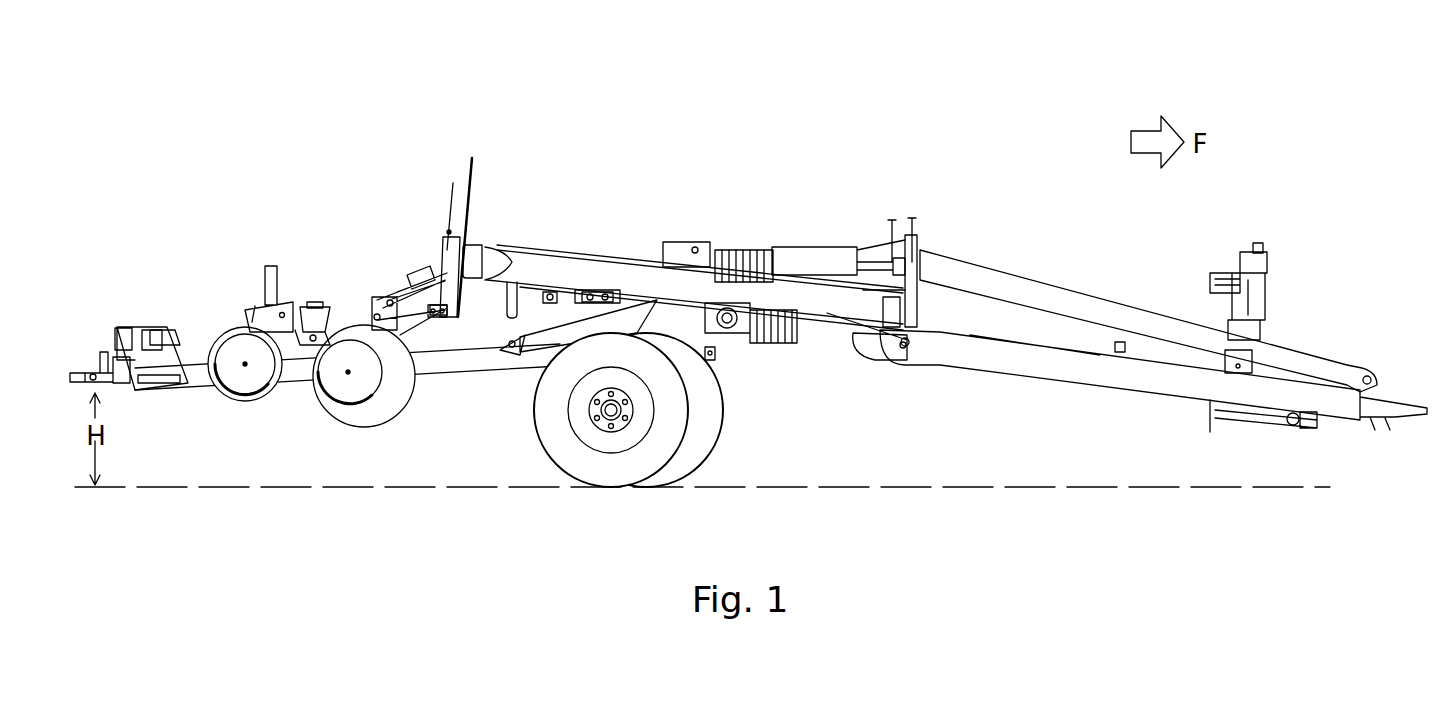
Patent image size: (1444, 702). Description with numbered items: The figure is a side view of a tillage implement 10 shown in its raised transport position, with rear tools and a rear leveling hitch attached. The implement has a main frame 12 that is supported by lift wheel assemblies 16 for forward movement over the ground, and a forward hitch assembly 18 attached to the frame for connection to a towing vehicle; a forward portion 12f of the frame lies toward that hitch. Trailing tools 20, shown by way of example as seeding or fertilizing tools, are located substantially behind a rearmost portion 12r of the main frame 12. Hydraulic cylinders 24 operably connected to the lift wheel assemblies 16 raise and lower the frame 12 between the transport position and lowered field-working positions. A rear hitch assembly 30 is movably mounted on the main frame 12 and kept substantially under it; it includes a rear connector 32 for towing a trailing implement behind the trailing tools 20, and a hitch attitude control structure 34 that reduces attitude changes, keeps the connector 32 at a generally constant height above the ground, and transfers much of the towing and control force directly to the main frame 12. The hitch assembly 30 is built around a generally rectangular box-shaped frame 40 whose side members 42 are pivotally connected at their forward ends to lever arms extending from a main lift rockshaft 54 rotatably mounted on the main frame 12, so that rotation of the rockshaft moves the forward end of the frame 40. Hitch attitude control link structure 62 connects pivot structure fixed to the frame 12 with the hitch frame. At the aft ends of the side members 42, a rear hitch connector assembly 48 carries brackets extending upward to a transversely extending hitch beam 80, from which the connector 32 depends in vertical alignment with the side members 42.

The tillage implement 10 is at (353, 119).
The main frame 12 is at (564, 236).
The rearmost portion of the main frame 12r is at (445, 262).
The front frame portion 12f is at (932, 308).
The lift wheel assemblies 16 is at (750, 438).
The forward hitch assembly 18 is at (1377, 328).
The trailing tools 20 is at (249, 257).
The hydraulic cylinders 24 is at (800, 248).
The rear hitch assembly 30 is at (491, 397).
The rear connector 32 is at (73, 375).
The hitch attitude control structure 34 is at (538, 311).
The box-shaped frame 40 is at (210, 412).
The side members 42 is at (297, 375).
The rear hitch connector assembly 48 is at (159, 302).
The main lift rockshaft 54 is at (750, 340).
The hitch attitude control link structure 62 is at (573, 293).
The hitch beam 80 is at (172, 335).